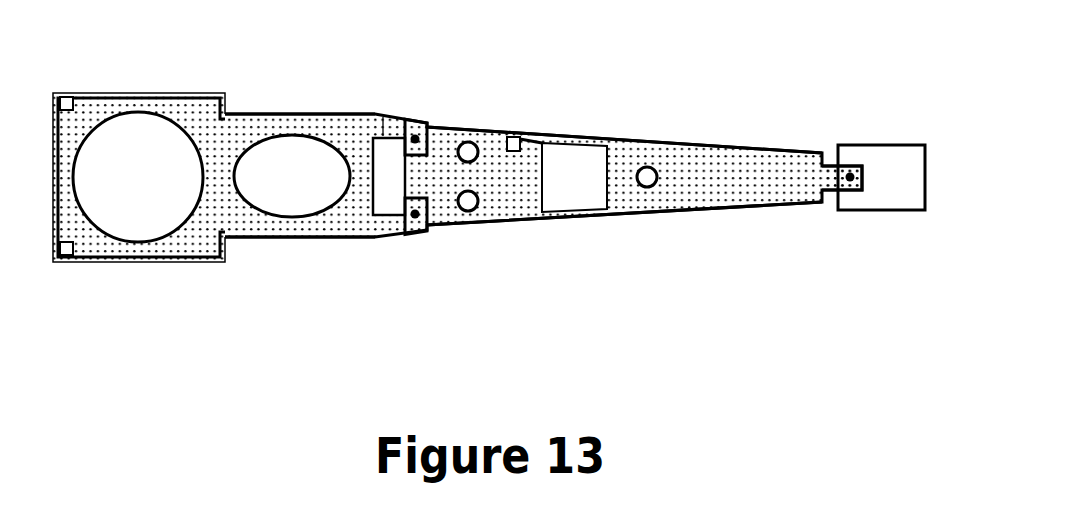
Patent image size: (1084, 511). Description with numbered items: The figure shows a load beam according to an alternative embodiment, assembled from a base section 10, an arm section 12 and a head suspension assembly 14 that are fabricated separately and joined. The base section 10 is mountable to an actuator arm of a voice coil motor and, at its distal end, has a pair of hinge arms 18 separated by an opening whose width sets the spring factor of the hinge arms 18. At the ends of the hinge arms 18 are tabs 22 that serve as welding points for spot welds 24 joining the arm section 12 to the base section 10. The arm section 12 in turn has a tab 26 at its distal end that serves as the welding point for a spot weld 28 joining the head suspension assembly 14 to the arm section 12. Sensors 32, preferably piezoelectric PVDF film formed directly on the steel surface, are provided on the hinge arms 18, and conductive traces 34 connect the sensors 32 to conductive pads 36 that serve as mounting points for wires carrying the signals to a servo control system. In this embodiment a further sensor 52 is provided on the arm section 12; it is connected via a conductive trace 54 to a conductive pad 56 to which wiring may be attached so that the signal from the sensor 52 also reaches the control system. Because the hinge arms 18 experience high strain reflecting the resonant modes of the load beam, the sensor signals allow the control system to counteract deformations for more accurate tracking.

The base section 10 is at (176, 93).
The arm section 12 is at (643, 141).
The head suspension assembly 14 is at (919, 146).
The hinge arms 18 is at (388, 115).
The tabs 22 is at (413, 128).
The spot welds 24 is at (424, 128).
The tab 26 is at (829, 158).
The spot weld 28 is at (853, 170).
The sensors 32 is at (382, 115).
The conductive traces 34 is at (243, 115).
The conductive pads 36 is at (67, 96).
The sensor 52 is at (580, 155).
The conductive trace 54 is at (533, 142).
The conductive pad 56 is at (513, 137).